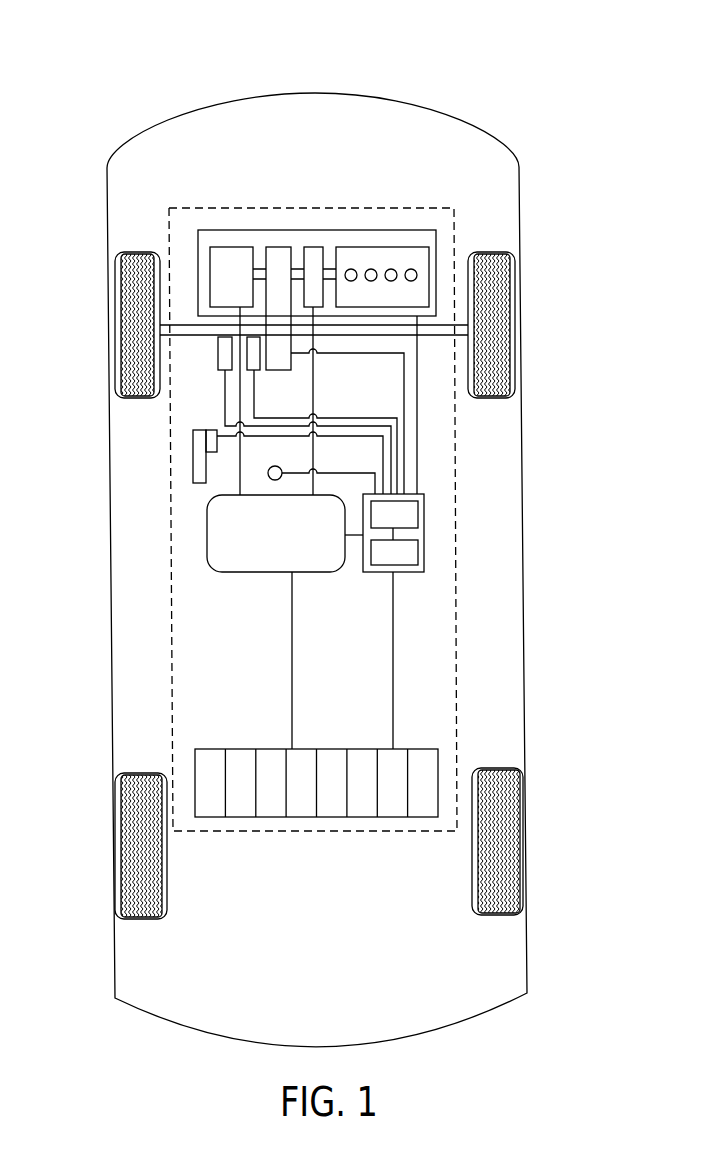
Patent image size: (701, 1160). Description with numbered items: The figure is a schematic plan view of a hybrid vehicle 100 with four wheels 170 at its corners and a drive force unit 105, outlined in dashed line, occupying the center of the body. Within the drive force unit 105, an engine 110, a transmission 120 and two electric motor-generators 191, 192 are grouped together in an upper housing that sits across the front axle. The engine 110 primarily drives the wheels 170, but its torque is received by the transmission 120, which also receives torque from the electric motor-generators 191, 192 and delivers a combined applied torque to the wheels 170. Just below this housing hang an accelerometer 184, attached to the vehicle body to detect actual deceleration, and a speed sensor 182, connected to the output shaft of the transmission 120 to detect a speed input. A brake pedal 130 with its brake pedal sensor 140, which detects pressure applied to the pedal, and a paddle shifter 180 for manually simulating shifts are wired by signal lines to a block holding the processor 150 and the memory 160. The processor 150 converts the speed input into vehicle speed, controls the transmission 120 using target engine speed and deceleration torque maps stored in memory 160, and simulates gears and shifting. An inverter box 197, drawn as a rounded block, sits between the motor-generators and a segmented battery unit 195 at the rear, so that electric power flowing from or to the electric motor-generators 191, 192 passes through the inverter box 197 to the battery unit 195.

The hybrid vehicle 100 is at (68, 68).
The drive force unit 105 is at (170, 537).
The engine 110 is at (380, 247).
The transmission 120 is at (278, 247).
The brake pedal 130 is at (200, 460).
The brake pedal sensor 140 is at (210, 434).
The processor 150 is at (421, 513).
The memory 160 is at (421, 553).
The wheels 170 is at (114, 332).
The paddle shifter 180 is at (283, 471).
The speed sensor 182 is at (253, 365).
The accelerometer 184 is at (223, 363).
The electric motor-generator 191 is at (232, 247).
The electric motor-generator 192 is at (313, 247).
The battery unit 195 is at (243, 749).
The inverter box 197 is at (260, 573).